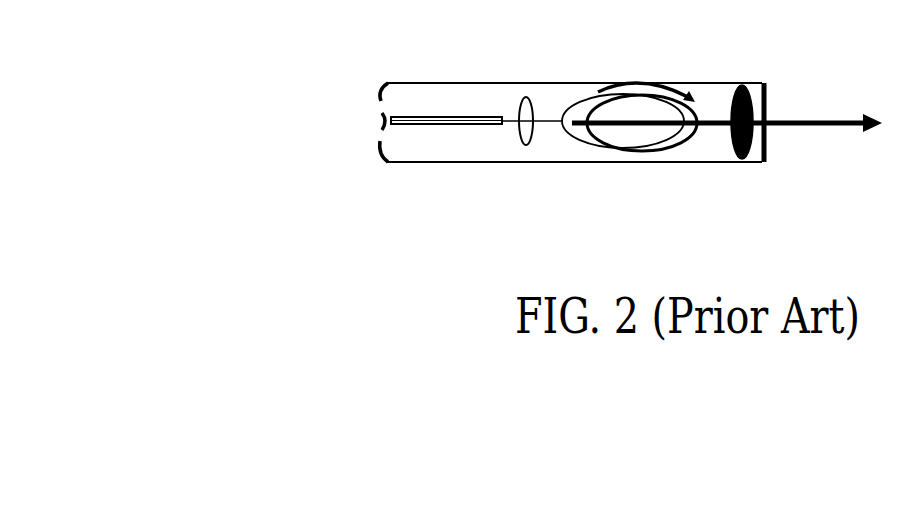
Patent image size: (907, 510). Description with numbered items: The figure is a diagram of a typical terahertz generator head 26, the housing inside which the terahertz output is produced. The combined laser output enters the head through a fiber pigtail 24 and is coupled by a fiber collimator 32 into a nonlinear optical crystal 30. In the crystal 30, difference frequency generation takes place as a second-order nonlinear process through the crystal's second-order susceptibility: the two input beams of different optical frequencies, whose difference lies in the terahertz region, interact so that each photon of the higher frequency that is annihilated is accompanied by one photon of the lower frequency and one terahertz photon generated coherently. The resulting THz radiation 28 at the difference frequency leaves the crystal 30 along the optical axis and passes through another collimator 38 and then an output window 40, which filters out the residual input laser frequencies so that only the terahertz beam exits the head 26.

The fiber pigtail 24 is at (451, 126).
The THz generator head 26 is at (468, 82).
The THz radiation 28 is at (815, 118).
The nonlinear optical (NLO) crystal 30 is at (635, 150).
The fiber collimator 32 is at (527, 88).
The collimator 38 is at (742, 83).
The output window 40 is at (766, 162).